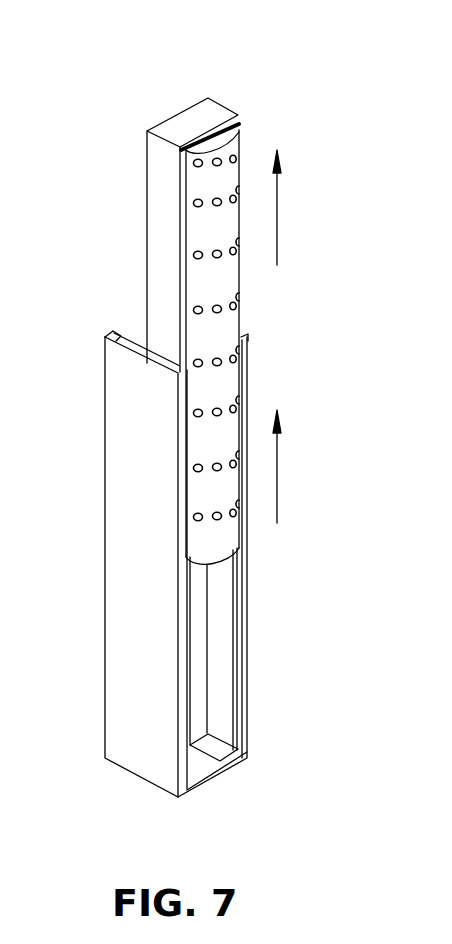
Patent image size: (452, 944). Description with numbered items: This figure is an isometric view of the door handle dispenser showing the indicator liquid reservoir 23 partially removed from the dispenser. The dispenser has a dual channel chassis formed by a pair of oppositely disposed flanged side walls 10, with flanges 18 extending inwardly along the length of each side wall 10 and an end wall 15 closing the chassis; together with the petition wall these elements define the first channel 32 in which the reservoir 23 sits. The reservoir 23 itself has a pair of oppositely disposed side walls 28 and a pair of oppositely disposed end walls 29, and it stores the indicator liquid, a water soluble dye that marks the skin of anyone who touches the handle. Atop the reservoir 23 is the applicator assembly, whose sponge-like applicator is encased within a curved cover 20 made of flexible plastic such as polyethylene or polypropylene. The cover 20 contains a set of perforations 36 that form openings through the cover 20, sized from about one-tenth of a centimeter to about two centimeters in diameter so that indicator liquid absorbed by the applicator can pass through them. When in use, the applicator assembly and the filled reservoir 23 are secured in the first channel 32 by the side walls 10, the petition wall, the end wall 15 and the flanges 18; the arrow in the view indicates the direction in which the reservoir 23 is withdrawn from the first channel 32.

The flanged side wall 10 is at (142, 643).
The end wall 15 is at (208, 762).
The flange 18 is at (243, 655).
The curved cover 20 is at (223, 287).
The reservoir 23 is at (249, 87).
The side wall 28 is at (160, 220).
The end wall 29 is at (188, 120).
The first channel 32 is at (198, 695).
The perforations 36 is at (218, 311).